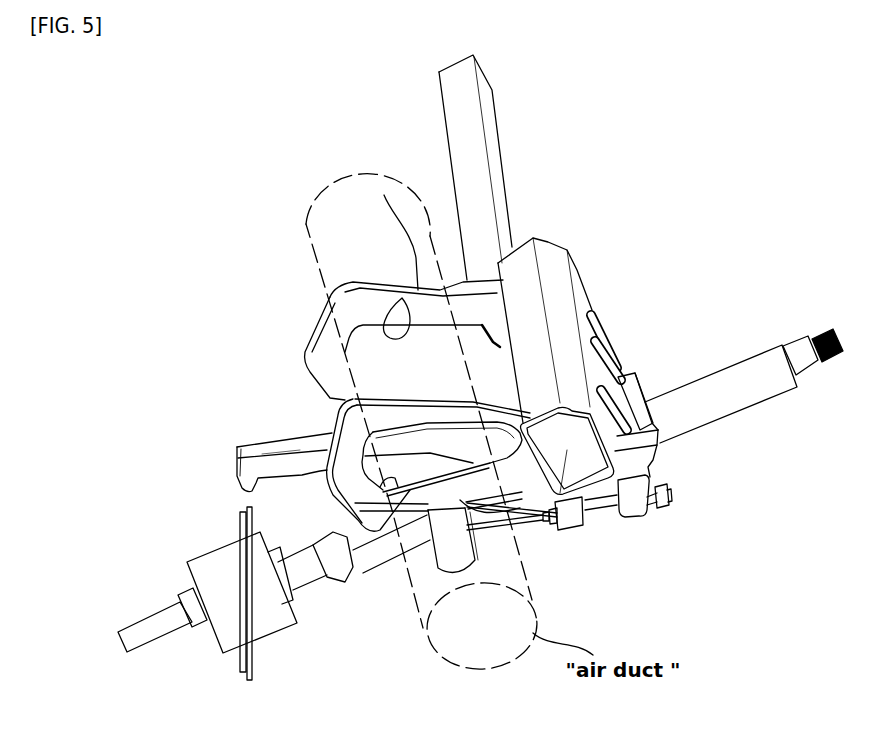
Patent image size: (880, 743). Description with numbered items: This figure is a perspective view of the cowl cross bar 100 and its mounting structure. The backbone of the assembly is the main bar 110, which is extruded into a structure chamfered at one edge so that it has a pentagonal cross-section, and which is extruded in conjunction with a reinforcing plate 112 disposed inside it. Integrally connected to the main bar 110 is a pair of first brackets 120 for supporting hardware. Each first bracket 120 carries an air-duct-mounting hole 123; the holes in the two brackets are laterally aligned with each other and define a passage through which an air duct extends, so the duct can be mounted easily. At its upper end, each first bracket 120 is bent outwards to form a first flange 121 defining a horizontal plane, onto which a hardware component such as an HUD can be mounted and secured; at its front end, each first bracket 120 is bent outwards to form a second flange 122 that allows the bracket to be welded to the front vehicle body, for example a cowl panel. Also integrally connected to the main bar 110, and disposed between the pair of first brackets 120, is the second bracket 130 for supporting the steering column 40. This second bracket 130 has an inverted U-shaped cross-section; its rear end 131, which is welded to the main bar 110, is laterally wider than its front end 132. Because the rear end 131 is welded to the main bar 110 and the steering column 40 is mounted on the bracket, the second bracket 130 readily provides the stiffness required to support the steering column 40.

The steering column 40 is at (370, 547).
The cowl cross bar 100 is at (568, 234).
The main bar 110 is at (555, 300).
The reinforcing plate 112 is at (597, 514).
The first bracket for supporting hardware 120 is at (294, 344).
The first flange 121 is at (384, 195).
The second flange 122 is at (312, 321).
The air-duct-mounting hole 123 is at (402, 298).
The second bracket for supporting steering column 130 is at (253, 453).
The rear end 131 is at (523, 397).
The front end 132 is at (288, 445).